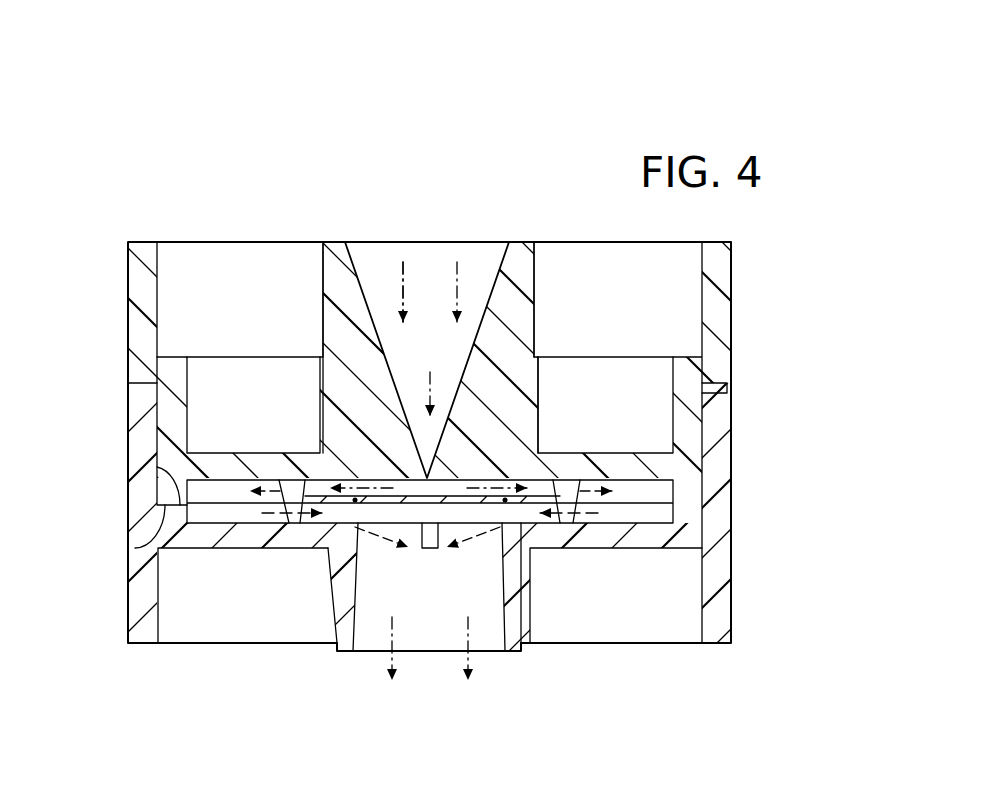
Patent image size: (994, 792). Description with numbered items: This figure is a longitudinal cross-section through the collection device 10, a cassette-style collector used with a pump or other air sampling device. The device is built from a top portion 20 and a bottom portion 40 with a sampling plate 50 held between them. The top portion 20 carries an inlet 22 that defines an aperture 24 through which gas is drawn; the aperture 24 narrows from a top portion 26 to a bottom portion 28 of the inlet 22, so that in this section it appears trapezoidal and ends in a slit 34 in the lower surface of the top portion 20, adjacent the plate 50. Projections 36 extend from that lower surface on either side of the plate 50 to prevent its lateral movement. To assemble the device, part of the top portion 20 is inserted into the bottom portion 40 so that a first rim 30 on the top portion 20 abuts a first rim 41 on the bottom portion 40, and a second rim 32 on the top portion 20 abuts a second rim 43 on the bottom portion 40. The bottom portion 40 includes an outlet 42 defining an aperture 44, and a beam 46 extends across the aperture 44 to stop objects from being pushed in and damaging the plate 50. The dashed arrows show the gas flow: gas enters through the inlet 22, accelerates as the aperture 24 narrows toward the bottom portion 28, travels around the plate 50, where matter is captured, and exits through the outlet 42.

The collection device 10 is at (399, 126).
The top portion 20 is at (732, 302).
The inlet 22 is at (522, 258).
The aperture 24 is at (437, 252).
The top portion of inlet 26 is at (337, 242).
The bottom portion of inlet 28 is at (400, 478).
The first rim 30 is at (707, 383).
The second rim 32 is at (135, 549).
The slit 34 is at (425, 465).
The projections 36 is at (578, 505).
The bottom portion 40 is at (732, 530).
The first rim 41 is at (722, 388).
The outlet 42 is at (327, 580).
The second rim 43 is at (172, 478).
The aperture 44 is at (433, 632).
The beam 46 is at (440, 548).
The plate 50 is at (523, 508).